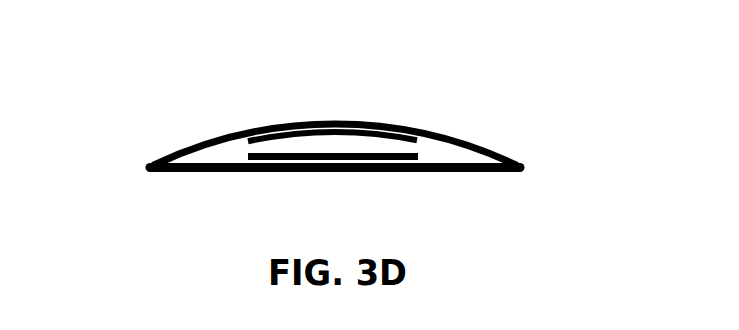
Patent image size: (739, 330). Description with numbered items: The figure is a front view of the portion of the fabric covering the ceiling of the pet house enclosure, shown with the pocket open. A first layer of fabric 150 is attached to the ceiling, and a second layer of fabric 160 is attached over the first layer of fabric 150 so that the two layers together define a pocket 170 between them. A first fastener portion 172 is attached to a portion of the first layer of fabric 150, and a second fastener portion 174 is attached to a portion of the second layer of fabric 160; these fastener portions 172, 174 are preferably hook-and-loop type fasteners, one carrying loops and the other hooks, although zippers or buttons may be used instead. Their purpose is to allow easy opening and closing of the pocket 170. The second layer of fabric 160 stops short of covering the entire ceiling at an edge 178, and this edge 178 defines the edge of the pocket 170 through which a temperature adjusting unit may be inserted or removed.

The first layer of fabric 150 is at (442, 170).
The second layer of fabric 160 is at (185, 150).
The pocket 170 is at (200, 200).
The first fastener portion 172 is at (328, 157).
The second fastener portion 174 is at (382, 123).
The edge 178 is at (478, 117).